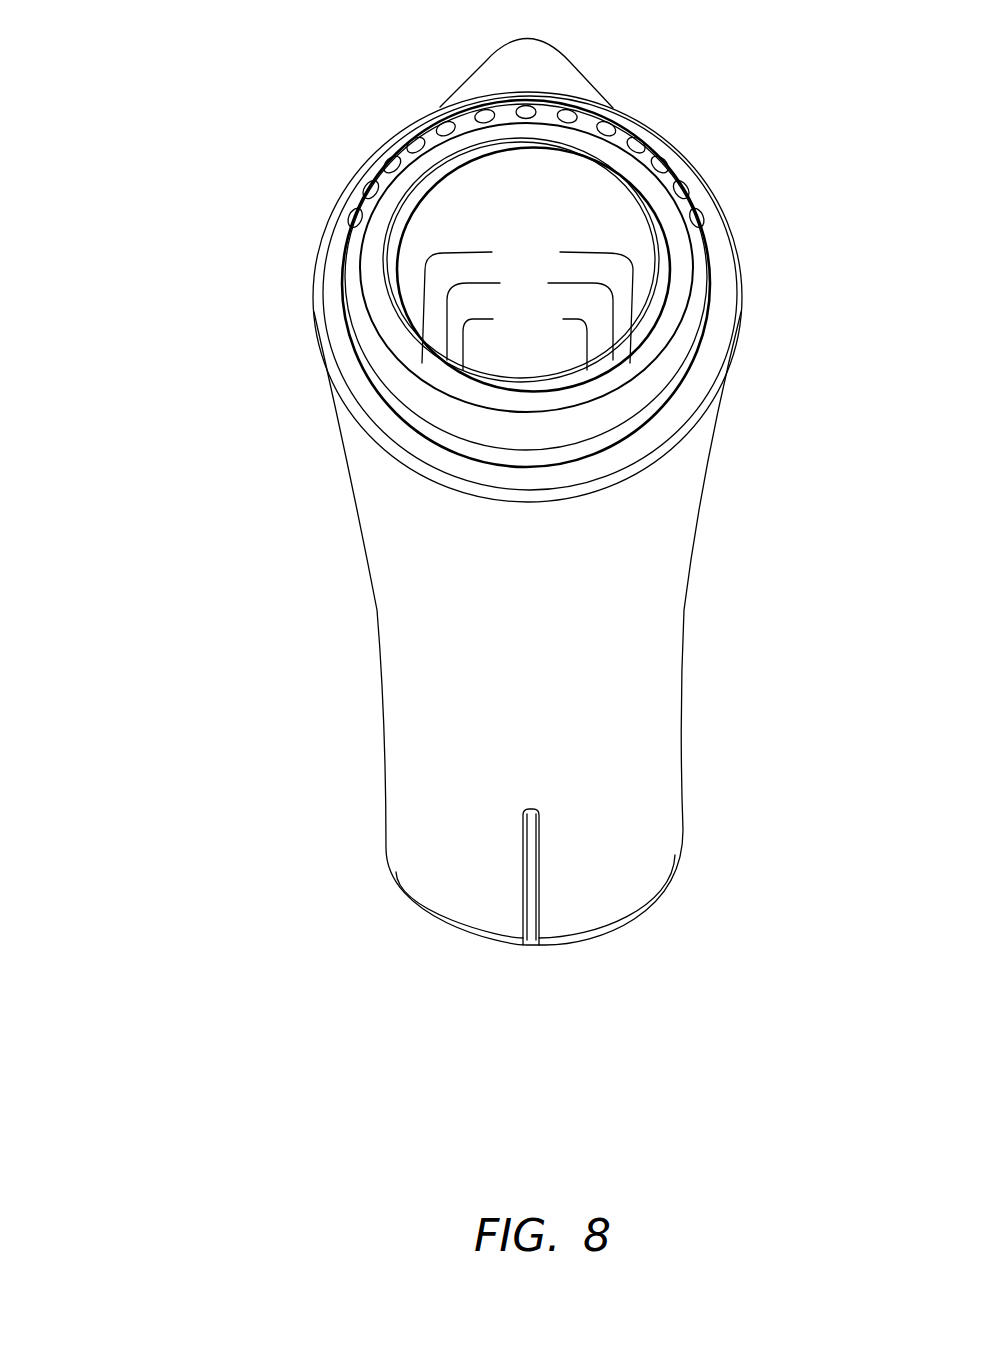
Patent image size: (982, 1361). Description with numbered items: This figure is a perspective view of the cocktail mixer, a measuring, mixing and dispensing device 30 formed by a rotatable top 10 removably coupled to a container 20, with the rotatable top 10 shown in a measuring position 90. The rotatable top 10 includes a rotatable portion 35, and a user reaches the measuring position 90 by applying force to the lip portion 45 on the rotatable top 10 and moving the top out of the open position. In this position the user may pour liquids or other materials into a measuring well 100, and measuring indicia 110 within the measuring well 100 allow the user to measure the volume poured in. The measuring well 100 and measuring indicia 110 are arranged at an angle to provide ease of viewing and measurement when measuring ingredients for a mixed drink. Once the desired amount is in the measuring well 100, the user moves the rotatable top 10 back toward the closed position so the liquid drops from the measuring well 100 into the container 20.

The rotatable top 10 is at (318, 312).
The container 20 is at (691, 549).
The measuring, mixing and dispensing device 30 is at (178, 129).
The rotatable portion 35 is at (363, 184).
The lip portion 45 is at (503, 63).
The measuring position 90 is at (681, 233).
The measuring well 100 is at (358, 341).
The measuring indicia 110 is at (578, 293).